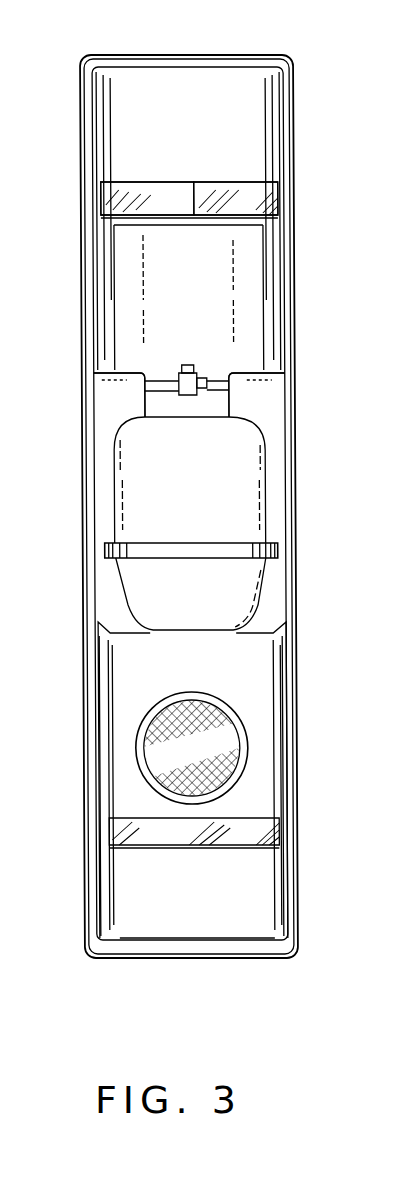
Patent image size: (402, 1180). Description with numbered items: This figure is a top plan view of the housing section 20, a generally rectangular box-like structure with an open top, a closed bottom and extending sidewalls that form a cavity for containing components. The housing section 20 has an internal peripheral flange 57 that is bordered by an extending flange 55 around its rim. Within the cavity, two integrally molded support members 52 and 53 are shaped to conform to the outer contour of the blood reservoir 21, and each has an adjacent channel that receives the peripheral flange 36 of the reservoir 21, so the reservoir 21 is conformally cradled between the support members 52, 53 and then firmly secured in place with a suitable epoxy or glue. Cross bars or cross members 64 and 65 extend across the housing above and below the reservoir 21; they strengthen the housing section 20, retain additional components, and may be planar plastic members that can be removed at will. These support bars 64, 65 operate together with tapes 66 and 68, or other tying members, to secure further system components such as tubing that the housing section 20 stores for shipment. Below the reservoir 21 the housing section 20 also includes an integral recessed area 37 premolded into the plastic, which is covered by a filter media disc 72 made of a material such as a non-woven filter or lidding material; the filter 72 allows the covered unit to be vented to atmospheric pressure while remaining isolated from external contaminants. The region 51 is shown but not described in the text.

The housing section 20 is at (352, 577).
The blood reservoir 21 is at (130, 580).
The peripheral flange 36 is at (280, 552).
The recessed area 37 is at (242, 753).
The upper compartment 51 is at (252, 78).
The support member 52 is at (270, 402).
The support member 53 is at (102, 405).
The extending flange 55 is at (85, 57).
The internal peripheral flange 57 is at (88, 112).
The cross bar 64 is at (252, 837).
The cross bar 65 is at (216, 179).
The tape 66 is at (237, 187).
The tape 68 is at (150, 192).
The filter media disc 72 is at (223, 727).